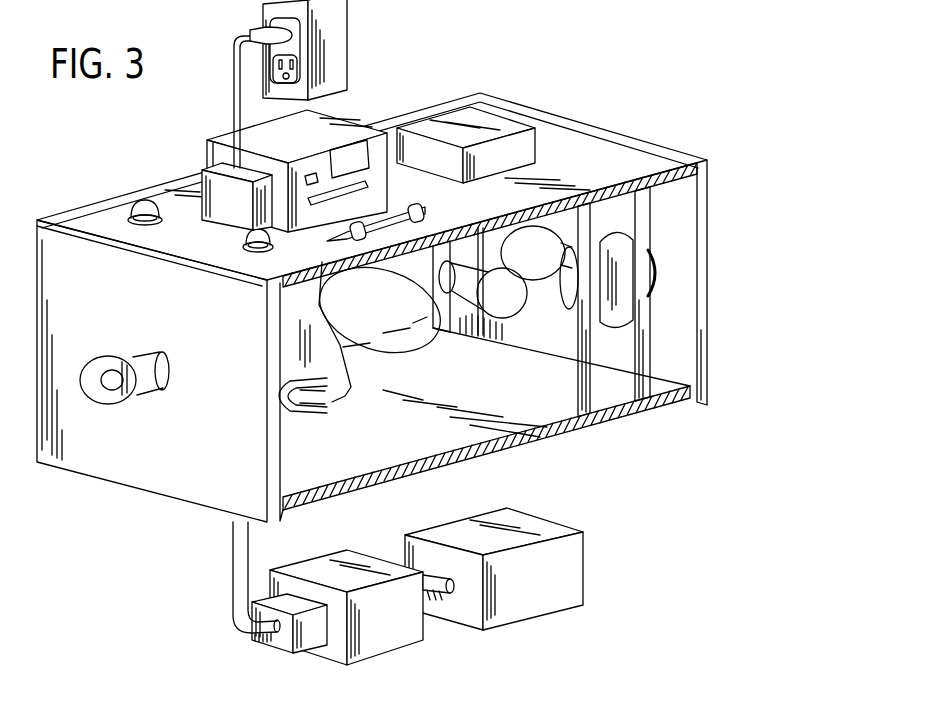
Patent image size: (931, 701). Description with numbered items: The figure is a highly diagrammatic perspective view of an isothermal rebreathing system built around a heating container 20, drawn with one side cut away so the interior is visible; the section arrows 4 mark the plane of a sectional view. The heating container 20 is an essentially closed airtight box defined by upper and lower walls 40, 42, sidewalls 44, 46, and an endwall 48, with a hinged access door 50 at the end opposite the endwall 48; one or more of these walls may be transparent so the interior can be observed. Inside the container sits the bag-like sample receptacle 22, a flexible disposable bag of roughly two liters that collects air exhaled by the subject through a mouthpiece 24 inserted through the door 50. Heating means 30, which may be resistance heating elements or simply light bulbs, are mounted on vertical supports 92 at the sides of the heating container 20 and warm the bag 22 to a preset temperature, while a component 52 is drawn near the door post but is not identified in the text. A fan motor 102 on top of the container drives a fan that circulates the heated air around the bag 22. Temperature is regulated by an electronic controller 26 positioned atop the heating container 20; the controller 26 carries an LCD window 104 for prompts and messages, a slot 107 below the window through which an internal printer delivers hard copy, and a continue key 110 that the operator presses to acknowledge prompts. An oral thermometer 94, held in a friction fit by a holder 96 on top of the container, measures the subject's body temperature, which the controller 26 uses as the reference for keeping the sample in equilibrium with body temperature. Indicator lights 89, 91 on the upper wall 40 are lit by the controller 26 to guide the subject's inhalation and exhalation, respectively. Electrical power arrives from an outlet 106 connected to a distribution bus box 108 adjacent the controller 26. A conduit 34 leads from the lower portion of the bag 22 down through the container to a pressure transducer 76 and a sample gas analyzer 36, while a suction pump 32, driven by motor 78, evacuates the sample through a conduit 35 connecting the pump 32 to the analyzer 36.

The section line 4- 4 is at (22, 254).
The heating container 20 is at (396, 317).
The sample bag 22 is at (381, 358).
The mouthpiece 24 is at (97, 357).
The electronic controller 26 is at (311, 169).
The heating means 30 is at (543, 283).
The suction pump 32 is at (523, 579).
The conduit 34 is at (233, 573).
The conduit 35 is at (443, 590).
The sample gas analyzer 36 is at (393, 650).
The upper wall 40 is at (641, 160).
The lower wall 42 is at (488, 435).
The sidewall 44 is at (463, 337).
The sidewall 46 is at (290, 333).
The endwall 48 is at (673, 192).
The hinged access door 50 is at (113, 468).
The clamp 52 is at (277, 373).
The pressure transducer 76 is at (270, 647).
The motor 78 is at (578, 588).
The indicator light 89 is at (140, 205).
The indicator light 91 is at (247, 238).
The vertical supports 92 is at (593, 222).
The oral thermometer 94 is at (370, 222).
The holder 96 is at (440, 217).
The electric motor 102 is at (453, 117).
The LCD window 104 is at (342, 163).
The outlet 106 is at (342, 19).
The slot 107 is at (308, 203).
The distribution bus box 108 is at (205, 183).
The continue key 110 is at (315, 174).